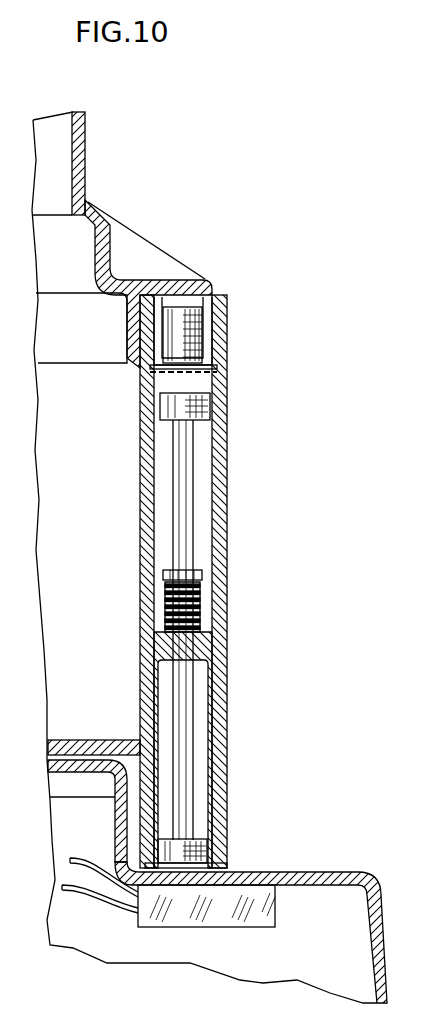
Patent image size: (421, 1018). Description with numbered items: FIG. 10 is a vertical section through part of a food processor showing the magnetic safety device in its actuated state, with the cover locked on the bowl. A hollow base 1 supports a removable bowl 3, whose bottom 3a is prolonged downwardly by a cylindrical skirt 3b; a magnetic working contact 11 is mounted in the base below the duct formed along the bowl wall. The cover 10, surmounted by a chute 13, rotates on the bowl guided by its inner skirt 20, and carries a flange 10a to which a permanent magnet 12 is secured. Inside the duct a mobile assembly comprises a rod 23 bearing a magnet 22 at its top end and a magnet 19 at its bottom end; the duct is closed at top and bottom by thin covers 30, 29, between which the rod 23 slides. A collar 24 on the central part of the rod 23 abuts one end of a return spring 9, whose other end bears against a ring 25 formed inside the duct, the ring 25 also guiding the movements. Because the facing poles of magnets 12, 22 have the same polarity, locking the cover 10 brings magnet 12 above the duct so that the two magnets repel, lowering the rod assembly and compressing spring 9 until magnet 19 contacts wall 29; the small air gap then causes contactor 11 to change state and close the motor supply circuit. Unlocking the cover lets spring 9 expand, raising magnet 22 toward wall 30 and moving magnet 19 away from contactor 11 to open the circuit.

The base 1 is at (333, 873).
The bowl 3 is at (138, 527).
The bottom 3a is at (73, 740).
The cylindrical skirt 3b is at (125, 818).
The return spring 9 is at (195, 613).
The cover 10 is at (98, 247).
The flange 10a is at (181, 278).
The magnetic working contact 11 is at (213, 917).
The permanent magnet 12 is at (195, 337).
The chute 13 is at (84, 133).
The magnet 19 is at (183, 843).
The inner skirt 20 is at (127, 337).
The magnet 22 is at (208, 413).
The rod 23 is at (183, 500).
The collar 24 is at (197, 578).
The ring 25 is at (196, 636).
The thin cover 29 is at (200, 857).
The thin cover 30 is at (195, 372).